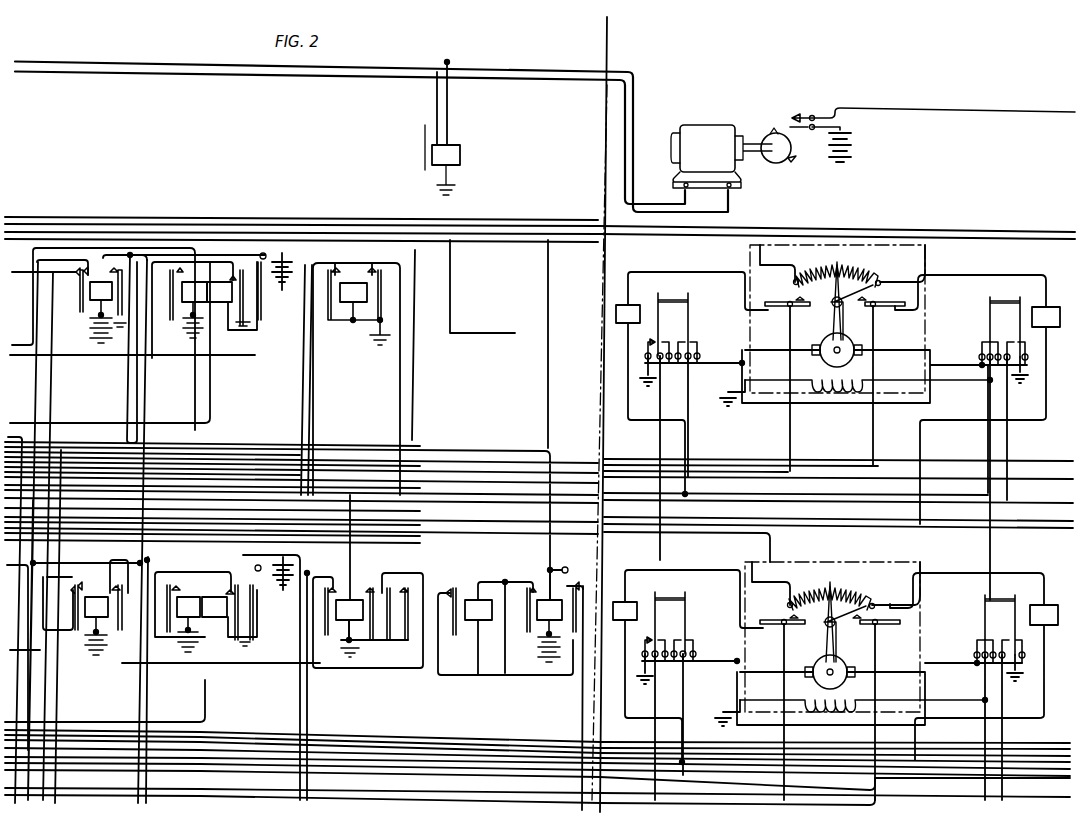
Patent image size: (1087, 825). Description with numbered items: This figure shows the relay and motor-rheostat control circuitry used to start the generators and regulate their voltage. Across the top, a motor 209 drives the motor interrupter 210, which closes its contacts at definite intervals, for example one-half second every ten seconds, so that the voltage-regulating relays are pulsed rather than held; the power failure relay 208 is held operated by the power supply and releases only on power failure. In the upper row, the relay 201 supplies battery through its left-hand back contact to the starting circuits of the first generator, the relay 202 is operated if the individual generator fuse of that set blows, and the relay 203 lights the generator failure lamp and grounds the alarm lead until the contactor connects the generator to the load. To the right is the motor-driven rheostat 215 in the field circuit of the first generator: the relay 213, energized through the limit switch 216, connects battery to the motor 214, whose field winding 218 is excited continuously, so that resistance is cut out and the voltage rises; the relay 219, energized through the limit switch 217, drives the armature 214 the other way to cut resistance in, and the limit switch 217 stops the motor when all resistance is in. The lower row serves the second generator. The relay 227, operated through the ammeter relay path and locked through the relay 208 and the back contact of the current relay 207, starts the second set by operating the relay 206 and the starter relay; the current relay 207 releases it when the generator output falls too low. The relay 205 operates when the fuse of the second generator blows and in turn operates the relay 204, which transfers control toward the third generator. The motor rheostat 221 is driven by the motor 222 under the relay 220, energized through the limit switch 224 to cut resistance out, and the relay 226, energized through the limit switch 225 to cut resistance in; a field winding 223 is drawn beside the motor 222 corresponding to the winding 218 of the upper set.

The relay 201 is at (98, 295).
The relay 202 is at (232, 292).
The relay 203 is at (367, 292).
The relay 204 is at (93, 597).
The relay 205 is at (215, 597).
The relay 206 is at (352, 600).
The current relay 207 is at (473, 600).
The power failure relay 208 is at (460, 156).
The motor 209 is at (710, 133).
The motor interrupter 210 is at (775, 125).
The relay 213 is at (630, 305).
The motor 214 is at (840, 338).
The motor-driven rheostat 215 is at (866, 250).
The limit switch 216 is at (785, 310).
The limit switch 217 is at (880, 310).
The field winding 218 is at (865, 378).
The relay 219 is at (1050, 307).
The relay 220 is at (626, 602).
The motor rheostat 221 is at (858, 590).
The motor 222 is at (845, 650).
The coil 223 is at (857, 698).
The limit switch 224 is at (778, 628).
The limit switch 225 is at (880, 628).
The relay 226 is at (1046, 605).
The relay 227 is at (545, 600).